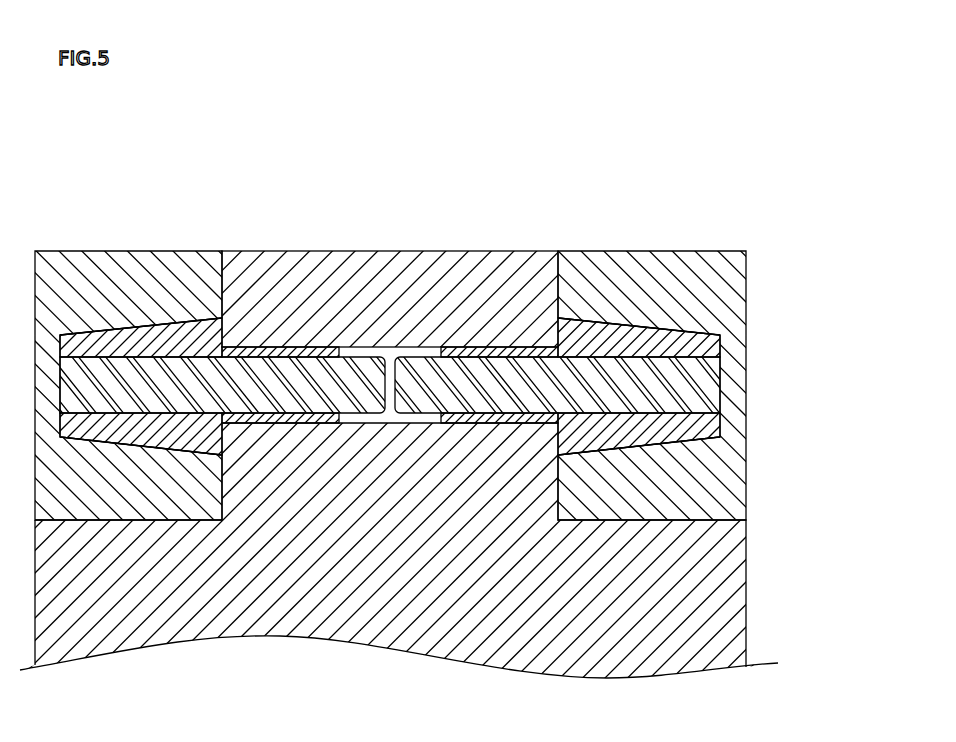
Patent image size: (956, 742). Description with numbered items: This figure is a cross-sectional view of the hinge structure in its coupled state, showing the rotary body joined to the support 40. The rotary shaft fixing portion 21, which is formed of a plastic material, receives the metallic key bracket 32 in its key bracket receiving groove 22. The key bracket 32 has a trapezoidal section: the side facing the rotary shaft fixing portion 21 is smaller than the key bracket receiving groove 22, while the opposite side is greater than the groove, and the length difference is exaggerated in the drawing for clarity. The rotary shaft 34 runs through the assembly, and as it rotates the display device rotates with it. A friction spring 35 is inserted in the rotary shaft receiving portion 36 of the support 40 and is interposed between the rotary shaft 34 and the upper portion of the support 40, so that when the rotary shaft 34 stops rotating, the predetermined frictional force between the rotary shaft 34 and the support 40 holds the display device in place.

The rotary shaft fixing portion 21 is at (732, 297).
The key bracket receiving groove 22 is at (675, 328).
The key bracket 32 is at (617, 337).
The rotary shaft 34 is at (698, 384).
The friction spring 35 is at (466, 347).
The rotary shaft receiving portion 36 is at (496, 277).
The support 40 is at (720, 579).